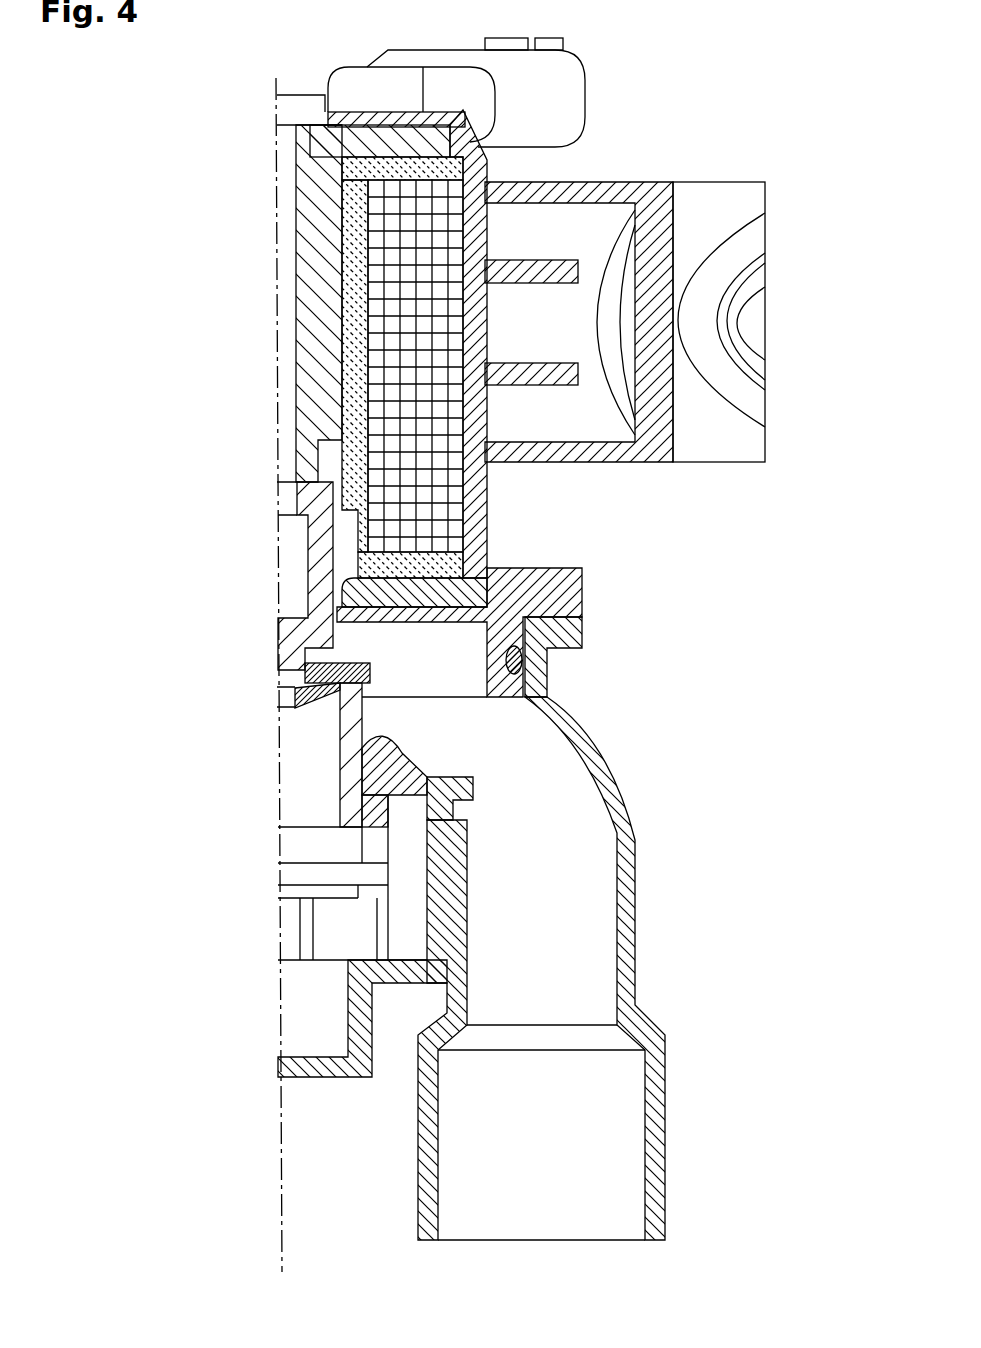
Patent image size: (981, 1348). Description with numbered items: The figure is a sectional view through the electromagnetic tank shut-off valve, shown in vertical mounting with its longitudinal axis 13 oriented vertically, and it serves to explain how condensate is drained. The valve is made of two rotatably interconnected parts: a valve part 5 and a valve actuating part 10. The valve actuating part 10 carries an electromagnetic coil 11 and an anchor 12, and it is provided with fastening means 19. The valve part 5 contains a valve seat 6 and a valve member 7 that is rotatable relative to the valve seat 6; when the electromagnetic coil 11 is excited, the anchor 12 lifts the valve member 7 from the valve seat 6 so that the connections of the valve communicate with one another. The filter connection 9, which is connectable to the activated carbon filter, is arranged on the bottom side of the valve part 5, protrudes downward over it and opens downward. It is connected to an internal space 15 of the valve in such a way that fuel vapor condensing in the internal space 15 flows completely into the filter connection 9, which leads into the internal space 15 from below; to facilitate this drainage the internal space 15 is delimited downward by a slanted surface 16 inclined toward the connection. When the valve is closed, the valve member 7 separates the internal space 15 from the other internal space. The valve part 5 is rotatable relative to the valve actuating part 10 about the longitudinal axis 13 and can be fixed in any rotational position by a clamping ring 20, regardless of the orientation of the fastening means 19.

The valve part 5 is at (673, 835).
The valve seat 6 is at (270, 681).
The valve member 7 is at (320, 550).
The filter connection 9 is at (600, 1132).
The valve actuating part 10 is at (558, 495).
The electromagnetic coil 11 is at (393, 250).
The anchor 12 is at (318, 308).
The longitudinal axis 13 is at (282, 1219).
The internal space 15 is at (470, 753).
The slanted surface 16 is at (403, 760).
The fastening means 19 is at (728, 197).
The clamping ring 20 is at (573, 602).